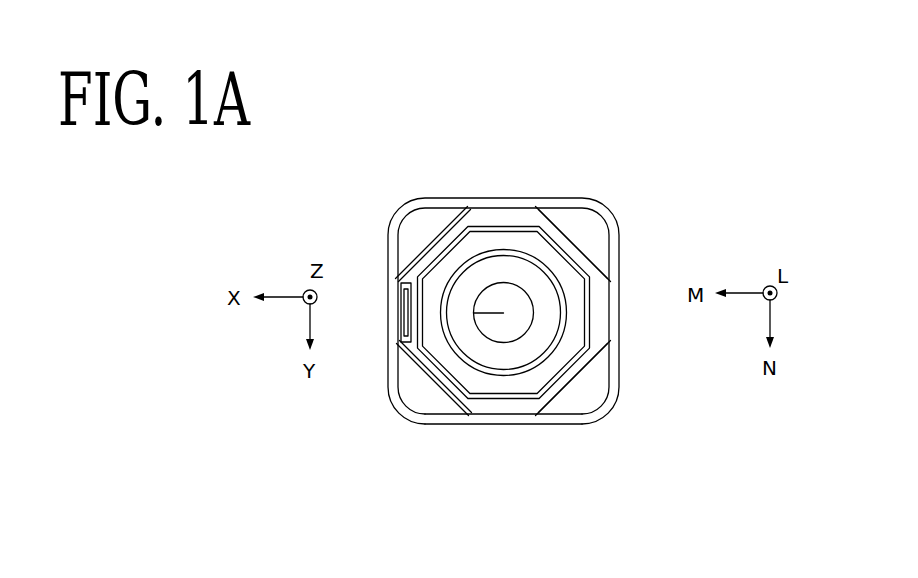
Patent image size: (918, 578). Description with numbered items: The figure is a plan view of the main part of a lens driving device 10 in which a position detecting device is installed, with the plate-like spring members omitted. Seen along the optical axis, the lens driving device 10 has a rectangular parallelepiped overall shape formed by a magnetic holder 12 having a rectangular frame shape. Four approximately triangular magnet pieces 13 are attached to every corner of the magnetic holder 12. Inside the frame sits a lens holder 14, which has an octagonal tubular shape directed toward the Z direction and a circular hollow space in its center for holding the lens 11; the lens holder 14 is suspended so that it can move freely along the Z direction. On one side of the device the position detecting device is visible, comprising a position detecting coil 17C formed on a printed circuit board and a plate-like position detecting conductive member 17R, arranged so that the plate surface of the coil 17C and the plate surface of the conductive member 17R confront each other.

The lens driving device 10 is at (262, 211).
The lens 11 is at (508, 270).
The magnetic holder 12 is at (505, 420).
The magnet piece 13 is at (586, 232).
The lens holder 14 is at (570, 348).
The position detecting conductive member 17R is at (398, 278).
The position detecting coil 17C is at (398, 322).